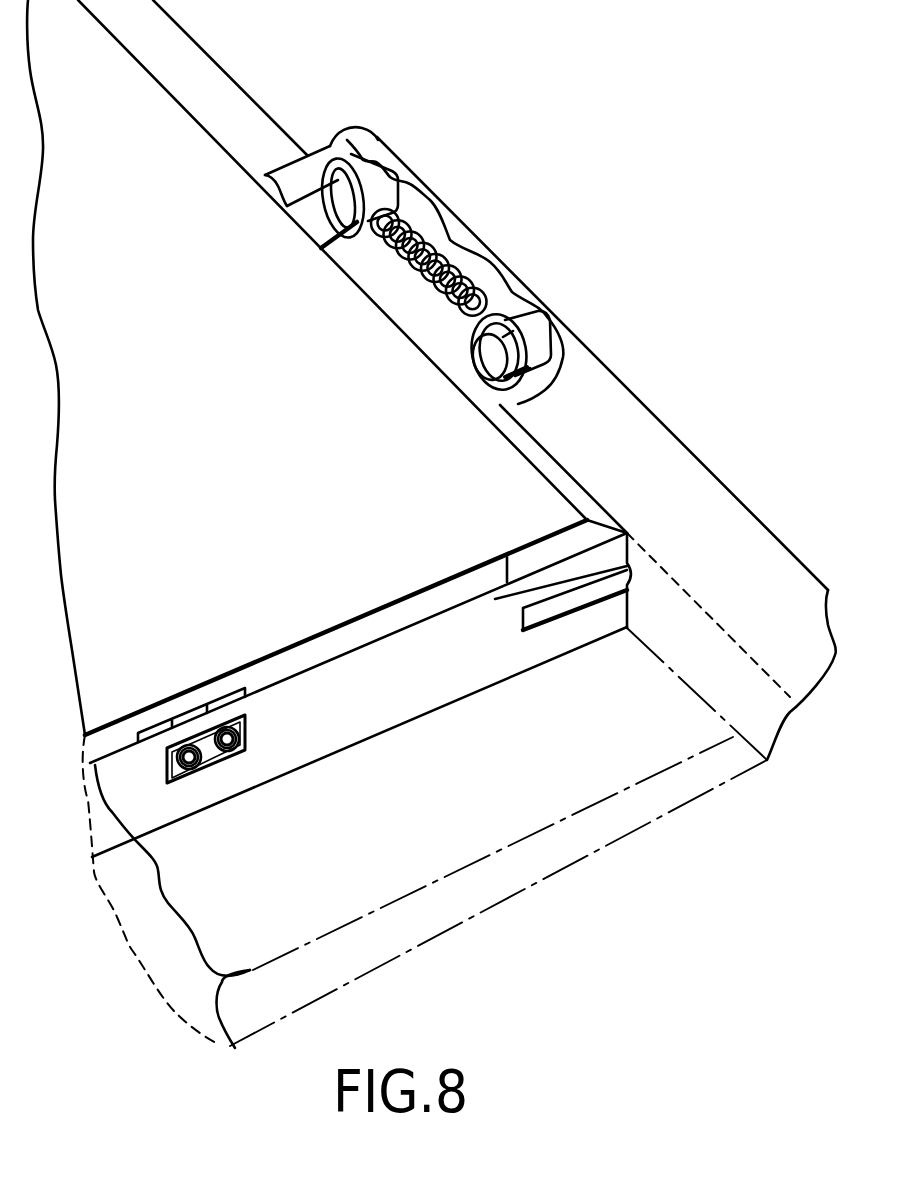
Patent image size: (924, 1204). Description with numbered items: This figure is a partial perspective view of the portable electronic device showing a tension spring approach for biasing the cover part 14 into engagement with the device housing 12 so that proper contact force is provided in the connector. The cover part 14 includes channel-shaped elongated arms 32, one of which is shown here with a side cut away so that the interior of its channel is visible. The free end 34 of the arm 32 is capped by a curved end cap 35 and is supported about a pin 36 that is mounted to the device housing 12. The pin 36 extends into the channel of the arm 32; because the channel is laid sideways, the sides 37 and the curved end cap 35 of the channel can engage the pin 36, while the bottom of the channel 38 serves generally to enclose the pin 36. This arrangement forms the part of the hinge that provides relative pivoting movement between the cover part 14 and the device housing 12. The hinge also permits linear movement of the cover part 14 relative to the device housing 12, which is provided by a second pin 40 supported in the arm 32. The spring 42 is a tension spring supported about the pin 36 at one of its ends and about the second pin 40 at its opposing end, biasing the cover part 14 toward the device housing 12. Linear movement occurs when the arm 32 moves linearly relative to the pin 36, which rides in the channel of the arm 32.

The device housing 12 is at (246, 528).
The cover part 14 is at (605, 537).
The elongated arm 32 is at (747, 500).
The free end 34 is at (373, 132).
The curved end cap 35 is at (350, 136).
The pin 36 is at (384, 180).
The side 37 is at (625, 532).
The bottom of the channel 38 is at (503, 265).
The second pin 40 is at (537, 334).
The spring 42 is at (422, 252).